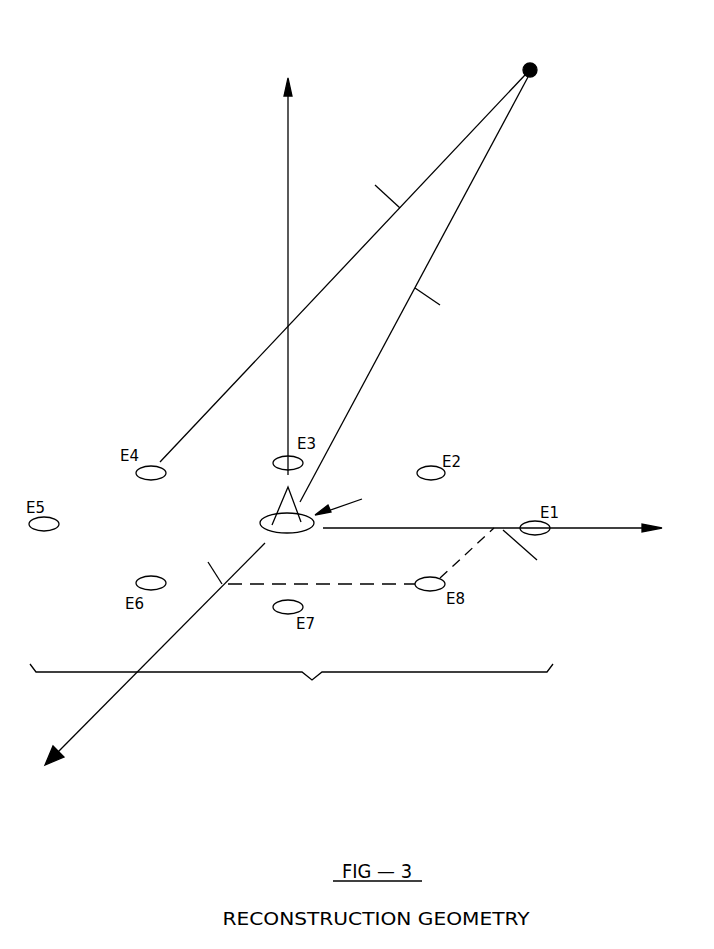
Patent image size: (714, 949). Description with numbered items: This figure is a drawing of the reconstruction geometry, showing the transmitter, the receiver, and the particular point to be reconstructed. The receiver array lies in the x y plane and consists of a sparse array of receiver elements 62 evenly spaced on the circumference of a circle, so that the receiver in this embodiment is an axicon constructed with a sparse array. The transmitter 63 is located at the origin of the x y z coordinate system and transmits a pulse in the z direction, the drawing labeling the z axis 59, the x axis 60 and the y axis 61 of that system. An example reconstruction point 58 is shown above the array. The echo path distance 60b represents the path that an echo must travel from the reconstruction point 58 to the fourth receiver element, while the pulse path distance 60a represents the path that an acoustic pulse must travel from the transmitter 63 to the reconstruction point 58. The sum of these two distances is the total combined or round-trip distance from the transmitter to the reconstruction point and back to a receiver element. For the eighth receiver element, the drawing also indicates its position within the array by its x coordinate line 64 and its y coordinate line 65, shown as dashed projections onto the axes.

The reconstruction point 58 is at (538, 78).
The Z axis 59 is at (307, 58).
The X axis 60 is at (680, 542).
The RPT distance 60a is at (483, 315).
The RPE distance 60b is at (385, 160).
The Y axis 61 is at (50, 784).
The receiver elements 62 is at (350, 718).
The transmitter 63 is at (307, 530).
The X coordinate X(E8) of receiver element E8 64 is at (560, 582).
The Y coordinate Y(E8) of receiver element E8 65 is at (180, 545).